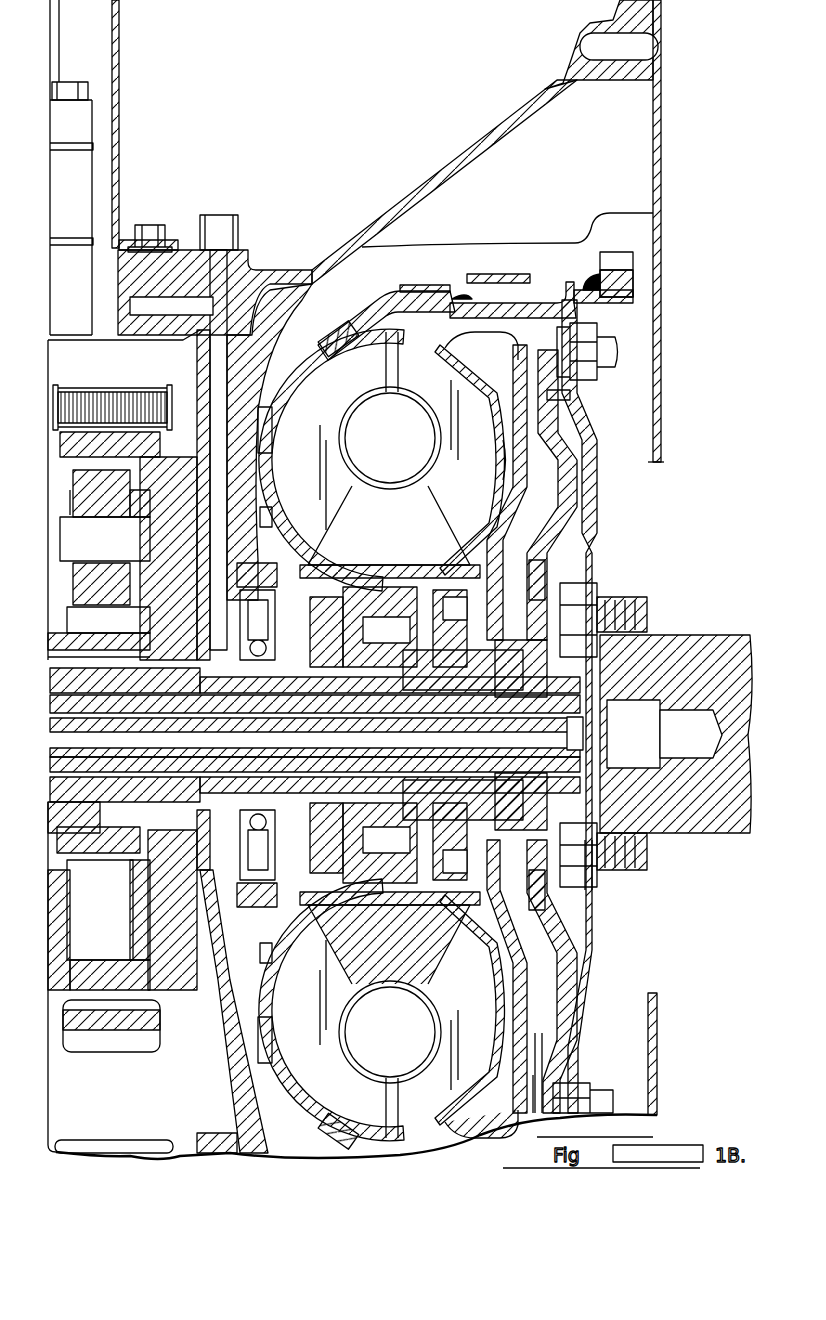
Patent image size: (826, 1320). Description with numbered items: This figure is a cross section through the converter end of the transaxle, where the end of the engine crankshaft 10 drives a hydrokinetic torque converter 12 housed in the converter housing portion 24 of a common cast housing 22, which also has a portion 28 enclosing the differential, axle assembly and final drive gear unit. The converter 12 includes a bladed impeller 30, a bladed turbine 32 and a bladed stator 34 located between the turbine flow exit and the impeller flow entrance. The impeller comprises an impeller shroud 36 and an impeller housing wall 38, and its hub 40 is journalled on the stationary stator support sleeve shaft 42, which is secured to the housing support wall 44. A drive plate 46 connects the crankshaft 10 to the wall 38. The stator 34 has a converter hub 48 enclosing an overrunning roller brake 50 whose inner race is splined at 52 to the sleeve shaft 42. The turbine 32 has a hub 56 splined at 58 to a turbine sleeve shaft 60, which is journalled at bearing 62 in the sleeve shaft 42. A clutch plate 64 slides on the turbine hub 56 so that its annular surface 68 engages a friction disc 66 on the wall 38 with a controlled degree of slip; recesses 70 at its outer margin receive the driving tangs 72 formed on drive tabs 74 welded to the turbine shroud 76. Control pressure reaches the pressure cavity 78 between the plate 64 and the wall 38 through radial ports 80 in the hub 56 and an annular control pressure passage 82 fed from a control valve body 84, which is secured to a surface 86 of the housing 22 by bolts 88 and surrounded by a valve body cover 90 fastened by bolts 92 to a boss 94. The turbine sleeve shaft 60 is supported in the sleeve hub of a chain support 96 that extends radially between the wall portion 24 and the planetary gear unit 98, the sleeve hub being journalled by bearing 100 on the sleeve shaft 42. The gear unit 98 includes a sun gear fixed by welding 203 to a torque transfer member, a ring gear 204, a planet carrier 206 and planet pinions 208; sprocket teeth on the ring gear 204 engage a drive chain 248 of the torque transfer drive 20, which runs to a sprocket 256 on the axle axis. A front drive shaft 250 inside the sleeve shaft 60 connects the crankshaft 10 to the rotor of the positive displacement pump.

The crankshaft 10 is at (684, 657).
The hydrokinetic torque converter 12 is at (380, 314).
The torque transfer drive 20 is at (98, 397).
The common cast housing 22 is at (256, 250).
The converter housing portion 24 is at (238, 504).
The housing portion 28 is at (346, 612).
The bladed impeller 30 is at (336, 411).
The bladed turbine 32 is at (488, 444).
The bladed stator 34 is at (408, 524).
The impeller shroud 36 is at (312, 356).
The impeller housing wall 38 is at (553, 426).
The impeller hub 40 is at (312, 600).
The stationary stator support sleeve shaft 42 is at (281, 732).
The housing support wall 44 is at (236, 534).
The drive plate 46 is at (595, 467).
The converter hub 48 is at (427, 640).
The roller brake 50 is at (386, 620).
The spline 52 is at (368, 732).
The turbine hub 56 is at (463, 634).
The spline 58 is at (493, 732).
The turbine sleeve shaft 60 is at (243, 732).
The bearing 62 is at (318, 732).
The clutch plate 64 is at (530, 528).
The friction disc 66 is at (553, 412).
The annular surface 68 is at (562, 322).
The recesses 70 is at (528, 326).
The rivet plate 72 is at (487, 328).
The drive tabs 74 is at (470, 356).
The turbine shroud 76 is at (508, 469).
The pressure cavity 78 is at (520, 586).
The radial ports 80 is at (528, 661).
The annular control pressure passage 82 is at (528, 770).
The control valve body 84 is at (70, 187).
The surface 86 is at (203, 732).
The bolts 88 is at (80, 89).
The valve body cover 90 is at (121, 102).
The bolts 92 is at (146, 226).
The boss 94 is at (184, 247).
The chain support 96 is at (165, 507).
The planetary gear unit 98 is at (68, 498).
The bearing 100 is at (147, 732).
The welding 203 is at (60, 631).
The ring gear 204 is at (80, 447).
The planet carrier 206 is at (67, 558).
The planet pinions 208 is at (88, 506).
The drive chain 248 is at (70, 392).
The front drive shaft 250 is at (584, 735).
The sprocket 256 is at (120, 1142).